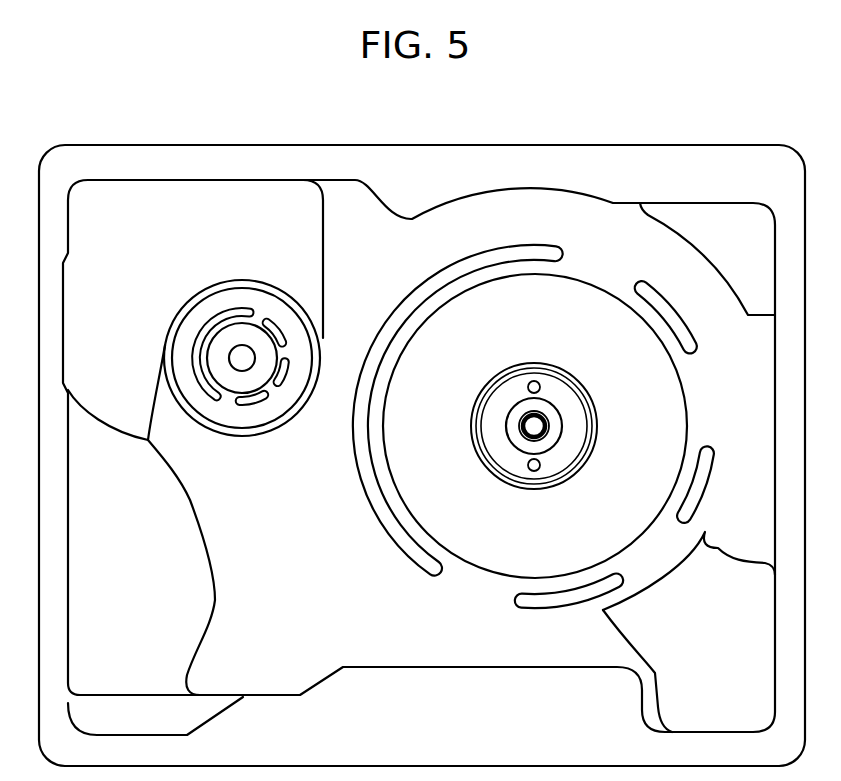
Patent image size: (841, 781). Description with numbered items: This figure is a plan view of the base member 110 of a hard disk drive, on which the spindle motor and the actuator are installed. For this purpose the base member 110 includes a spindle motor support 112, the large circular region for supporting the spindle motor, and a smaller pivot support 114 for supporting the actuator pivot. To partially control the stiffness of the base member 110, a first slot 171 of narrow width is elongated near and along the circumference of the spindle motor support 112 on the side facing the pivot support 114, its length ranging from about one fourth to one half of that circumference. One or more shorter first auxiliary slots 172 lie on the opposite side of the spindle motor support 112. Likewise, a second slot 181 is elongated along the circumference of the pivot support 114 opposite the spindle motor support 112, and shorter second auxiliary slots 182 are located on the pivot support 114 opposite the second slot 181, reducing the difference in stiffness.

The base member 110 is at (671, 156).
The spindle motor support 112 is at (672, 411).
The pivot support 114 is at (238, 333).
The first slot 171 is at (386, 520).
The first auxiliary slots 172 is at (600, 590).
The second slot 181 is at (197, 342).
The second auxiliary slots 182 is at (282, 382).